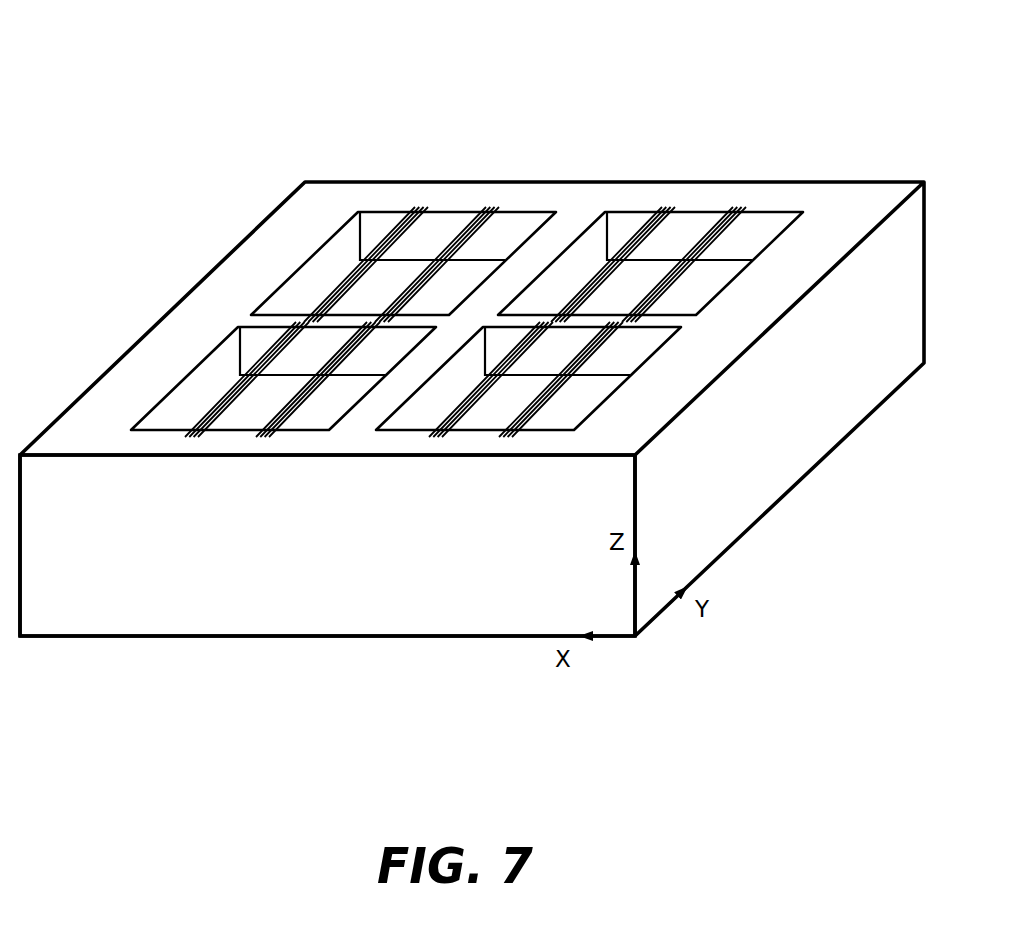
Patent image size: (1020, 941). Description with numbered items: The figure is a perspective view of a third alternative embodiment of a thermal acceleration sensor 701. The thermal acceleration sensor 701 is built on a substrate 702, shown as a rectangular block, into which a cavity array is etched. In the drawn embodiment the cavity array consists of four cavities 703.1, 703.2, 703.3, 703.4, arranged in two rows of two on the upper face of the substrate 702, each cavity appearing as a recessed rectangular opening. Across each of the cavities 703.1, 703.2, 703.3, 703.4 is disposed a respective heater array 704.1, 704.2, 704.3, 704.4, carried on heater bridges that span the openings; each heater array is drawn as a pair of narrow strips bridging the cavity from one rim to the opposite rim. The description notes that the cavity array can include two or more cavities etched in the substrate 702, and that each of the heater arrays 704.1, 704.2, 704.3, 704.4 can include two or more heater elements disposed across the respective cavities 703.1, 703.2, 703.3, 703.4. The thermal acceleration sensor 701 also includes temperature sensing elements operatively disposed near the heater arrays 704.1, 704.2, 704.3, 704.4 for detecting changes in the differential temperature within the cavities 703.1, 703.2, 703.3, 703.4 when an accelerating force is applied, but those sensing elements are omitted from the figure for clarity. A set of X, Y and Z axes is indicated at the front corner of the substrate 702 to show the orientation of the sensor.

The thermal acceleration sensor 701 is at (143, 90).
The substrate 702 is at (327, 545).
The cavity 703.1 is at (372, 233).
The cavity 703.2 is at (763, 233).
The cavity 703.3 is at (198, 388).
The cavity 703.4 is at (580, 402).
The heater array 704.1 is at (495, 210).
The heater array 704.2 is at (743, 208).
The heater array 704.3 is at (190, 438).
The heater array 704.4 is at (508, 438).